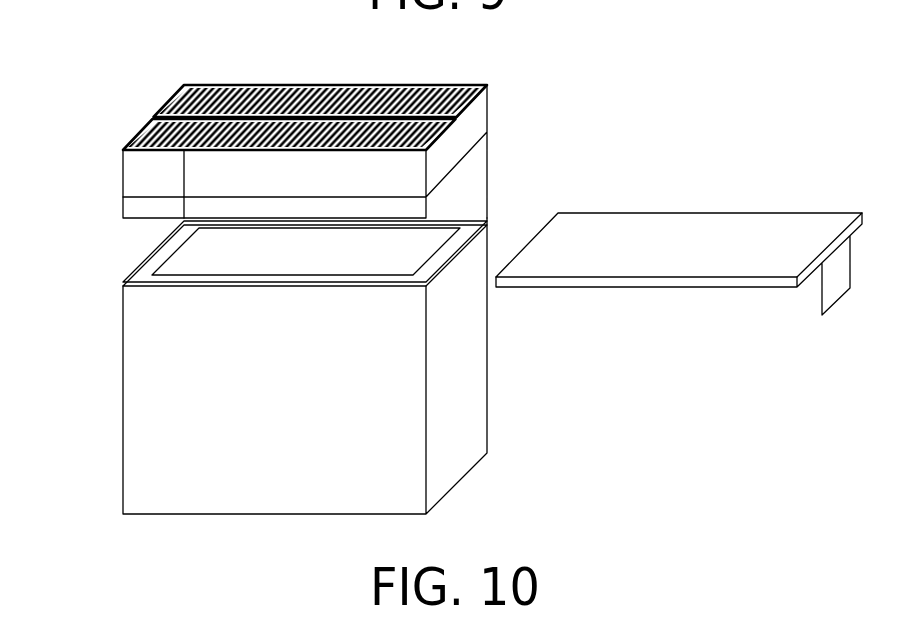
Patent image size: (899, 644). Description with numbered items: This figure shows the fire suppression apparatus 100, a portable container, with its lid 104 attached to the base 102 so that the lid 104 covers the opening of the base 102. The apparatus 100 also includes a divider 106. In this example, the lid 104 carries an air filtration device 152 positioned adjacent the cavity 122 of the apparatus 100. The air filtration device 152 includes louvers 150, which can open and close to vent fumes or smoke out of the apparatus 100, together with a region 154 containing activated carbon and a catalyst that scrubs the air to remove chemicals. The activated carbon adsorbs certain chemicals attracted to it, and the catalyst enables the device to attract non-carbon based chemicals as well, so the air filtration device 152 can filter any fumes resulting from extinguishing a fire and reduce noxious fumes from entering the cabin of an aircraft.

The fire suppression apparatus 100 is at (108, 63).
The base 102 is at (458, 378).
The lid 104 is at (477, 192).
The divider 106 is at (758, 228).
The cavity 122 is at (153, 237).
The louvers 150 is at (305, 70).
The air filtration device 152 is at (493, 84).
The region containing activated carbon and a catalyst 154 is at (145, 179).